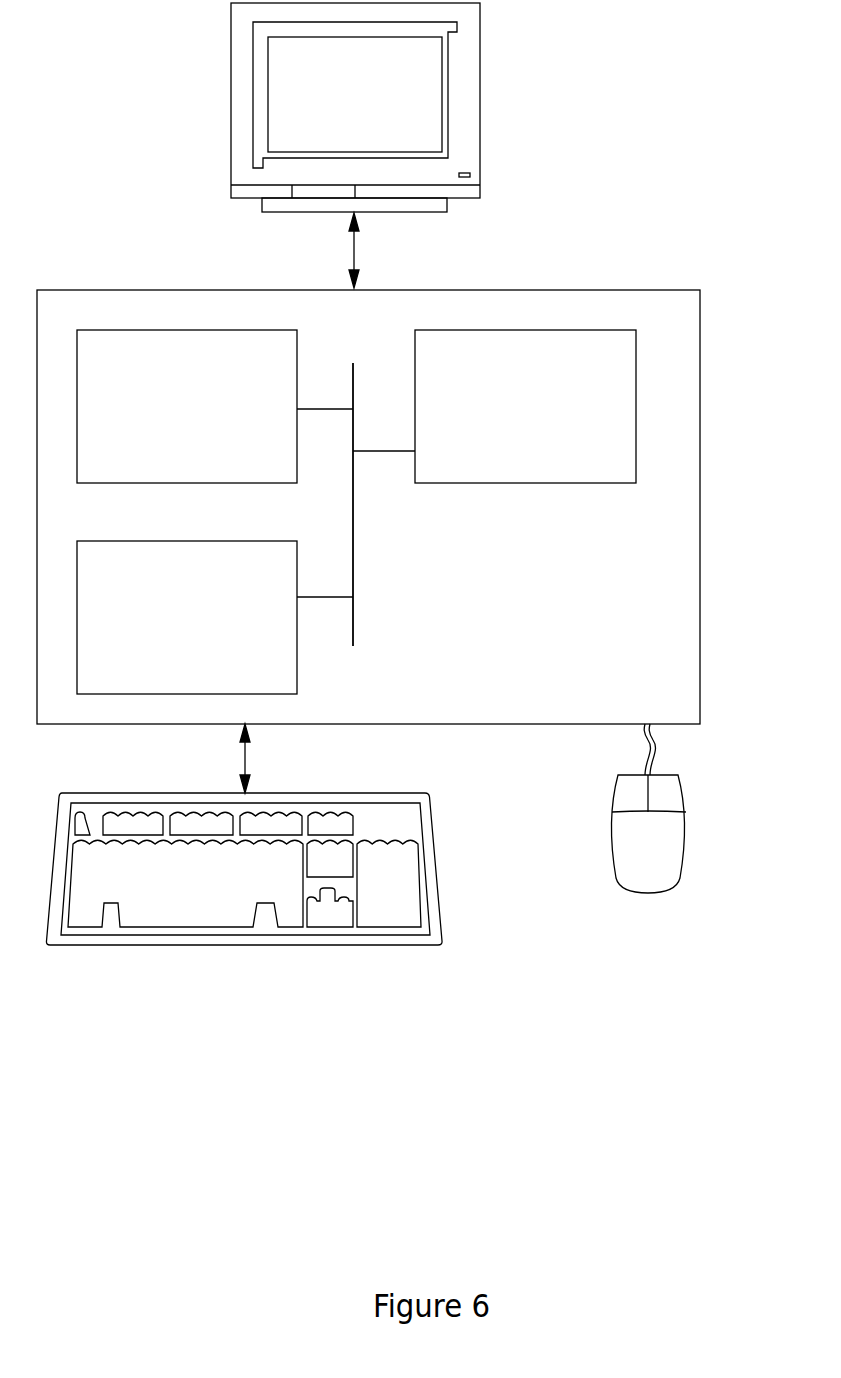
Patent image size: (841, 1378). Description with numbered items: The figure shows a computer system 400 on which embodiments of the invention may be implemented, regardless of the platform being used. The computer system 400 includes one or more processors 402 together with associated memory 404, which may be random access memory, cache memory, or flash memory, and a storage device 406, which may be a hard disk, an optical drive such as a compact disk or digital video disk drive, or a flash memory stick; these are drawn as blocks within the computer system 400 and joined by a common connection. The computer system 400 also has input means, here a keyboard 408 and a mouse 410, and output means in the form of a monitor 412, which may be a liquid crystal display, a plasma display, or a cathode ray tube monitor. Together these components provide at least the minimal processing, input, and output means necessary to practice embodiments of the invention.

The computer system 400 is at (675, 165).
The processor 402 is at (522, 417).
The memory 404 is at (167, 417).
The storage device 406 is at (163, 630).
The keyboard 408 is at (157, 906).
The mouse 410 is at (628, 852).
The monitor 412 is at (334, 109).